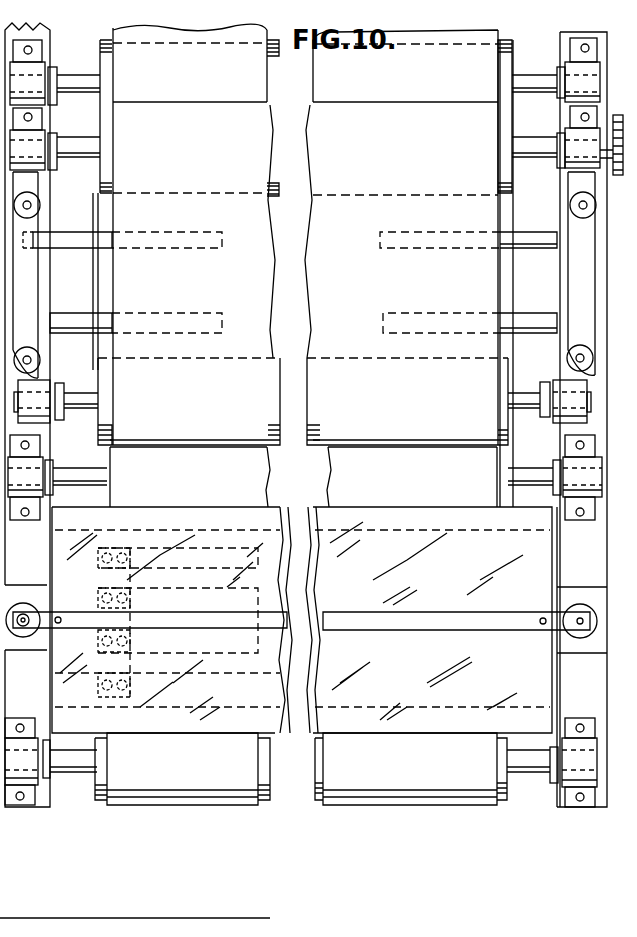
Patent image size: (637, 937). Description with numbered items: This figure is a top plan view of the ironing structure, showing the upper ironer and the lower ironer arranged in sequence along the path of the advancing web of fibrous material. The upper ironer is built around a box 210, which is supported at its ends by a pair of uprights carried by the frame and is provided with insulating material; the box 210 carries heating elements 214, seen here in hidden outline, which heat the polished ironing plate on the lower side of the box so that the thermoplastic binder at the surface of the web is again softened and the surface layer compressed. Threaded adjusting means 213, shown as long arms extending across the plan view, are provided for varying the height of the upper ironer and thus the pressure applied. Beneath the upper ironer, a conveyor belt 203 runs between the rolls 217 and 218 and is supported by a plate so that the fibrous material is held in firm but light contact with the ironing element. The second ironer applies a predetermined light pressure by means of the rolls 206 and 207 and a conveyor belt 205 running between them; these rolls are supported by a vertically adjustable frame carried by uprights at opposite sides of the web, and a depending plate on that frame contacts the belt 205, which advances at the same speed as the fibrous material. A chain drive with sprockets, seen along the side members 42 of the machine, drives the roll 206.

The frame 42 is at (598, 556).
The conveyor belt 203 is at (497, 33).
The conveyor belt 205 is at (495, 293).
The roll 206 is at (522, 163).
The roll 207 is at (549, 409).
The box 210 is at (543, 682).
The threaded adjusting means 213 is at (567, 632).
The heating elements 214 is at (212, 595).
The roll 217 is at (506, 463).
The roll 218 is at (302, 772).